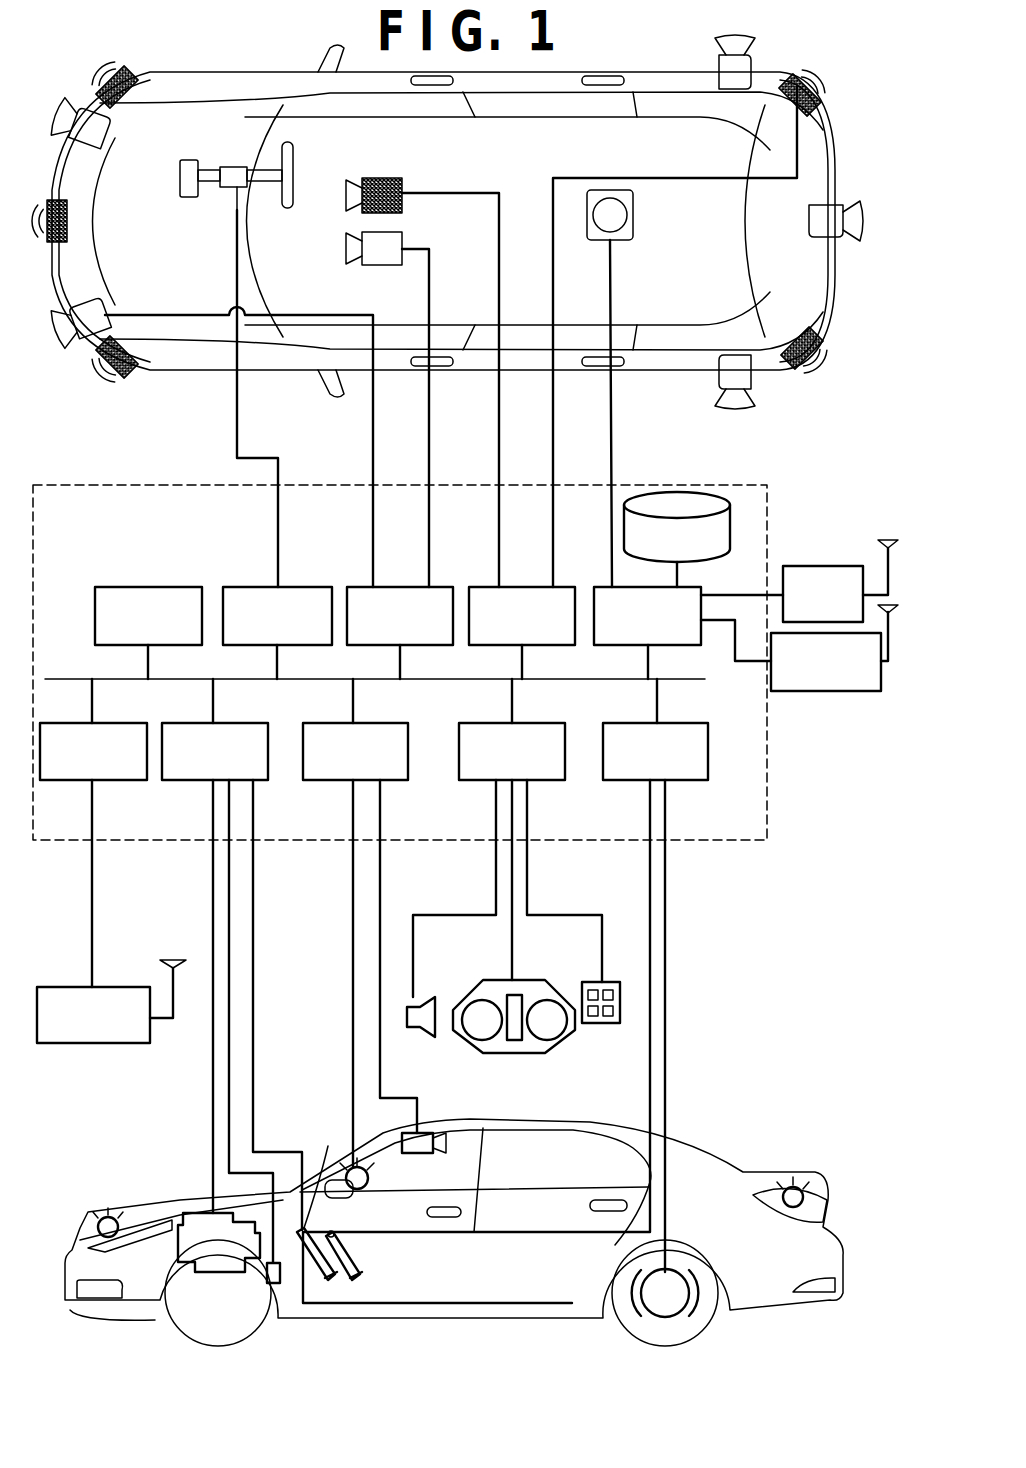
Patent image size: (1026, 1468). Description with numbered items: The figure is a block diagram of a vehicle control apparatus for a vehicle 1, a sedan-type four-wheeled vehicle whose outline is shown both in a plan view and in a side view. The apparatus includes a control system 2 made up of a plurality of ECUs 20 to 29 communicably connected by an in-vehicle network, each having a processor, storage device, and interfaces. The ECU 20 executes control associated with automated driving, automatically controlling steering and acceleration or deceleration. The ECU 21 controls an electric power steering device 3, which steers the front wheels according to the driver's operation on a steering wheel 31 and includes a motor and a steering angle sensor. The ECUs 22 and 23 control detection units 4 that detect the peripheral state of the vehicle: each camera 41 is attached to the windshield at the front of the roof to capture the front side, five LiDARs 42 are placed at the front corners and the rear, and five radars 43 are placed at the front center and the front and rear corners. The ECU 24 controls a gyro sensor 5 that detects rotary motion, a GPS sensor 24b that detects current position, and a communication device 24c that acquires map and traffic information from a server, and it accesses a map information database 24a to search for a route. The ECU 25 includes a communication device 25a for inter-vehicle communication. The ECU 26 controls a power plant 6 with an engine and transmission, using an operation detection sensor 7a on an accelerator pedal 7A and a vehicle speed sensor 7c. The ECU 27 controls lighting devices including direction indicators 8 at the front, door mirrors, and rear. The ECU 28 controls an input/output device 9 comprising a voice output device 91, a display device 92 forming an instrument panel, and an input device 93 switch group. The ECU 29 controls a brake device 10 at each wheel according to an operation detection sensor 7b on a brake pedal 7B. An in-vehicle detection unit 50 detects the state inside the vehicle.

The vehicle 1 is at (850, 137).
The control system 2 is at (740, 840).
The electric power steering device 3 is at (190, 197).
The steering wheel 31 is at (289, 208).
The detection unit 4 is at (75, 71).
The camera 41 is at (402, 200).
The LiDAR 42 is at (98, 150).
The millimeter wave radar 43 is at (132, 74).
The gyro sensor 5 is at (633, 215).
The power plant 6 is at (184, 1210).
The operation detection sensor 7a is at (324, 1169).
The accelerator pedal 7A is at (332, 1278).
The operation detection sensor 7b is at (336, 1236).
The brake pedal 7B is at (358, 1262).
The vehicle speed sensor 7c is at (275, 1283).
The direction indicator 8 is at (98, 1224).
The input/output device 9 is at (517, 1038).
The voice output device 91 is at (415, 1040).
The display device 92 is at (471, 997).
The input device 93 is at (600, 1023).
The brake device 10 is at (665, 1317).
The ECU 20 is at (182, 587).
The ECU 21 is at (307, 587).
The ECU 22 is at (397, 587).
The ECU 23 is at (523, 587).
The ECU 24 is at (596, 587).
The map information database 24a is at (675, 492).
The GPS sensor 24b is at (838, 566).
The communication device 24c is at (826, 691).
The ECU 25 is at (128, 780).
The communication device 25a is at (92, 1043).
The ECU 26 is at (196, 780).
The ECU 27 is at (322, 780).
The ECU 28 is at (552, 780).
The ECU 29 is at (694, 780).
The in-vehicle detection unit 50 is at (427, 1153).